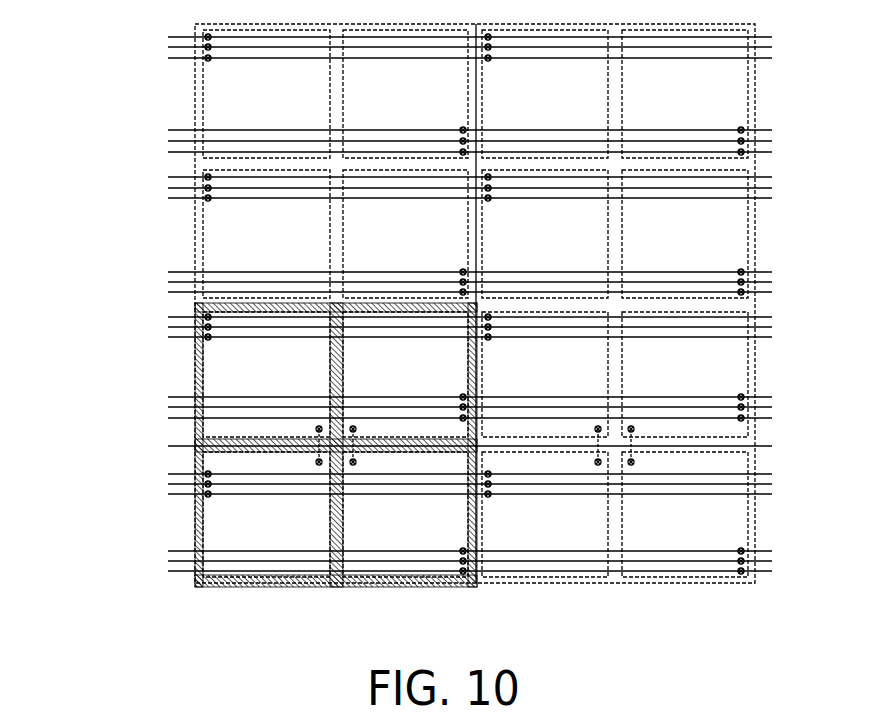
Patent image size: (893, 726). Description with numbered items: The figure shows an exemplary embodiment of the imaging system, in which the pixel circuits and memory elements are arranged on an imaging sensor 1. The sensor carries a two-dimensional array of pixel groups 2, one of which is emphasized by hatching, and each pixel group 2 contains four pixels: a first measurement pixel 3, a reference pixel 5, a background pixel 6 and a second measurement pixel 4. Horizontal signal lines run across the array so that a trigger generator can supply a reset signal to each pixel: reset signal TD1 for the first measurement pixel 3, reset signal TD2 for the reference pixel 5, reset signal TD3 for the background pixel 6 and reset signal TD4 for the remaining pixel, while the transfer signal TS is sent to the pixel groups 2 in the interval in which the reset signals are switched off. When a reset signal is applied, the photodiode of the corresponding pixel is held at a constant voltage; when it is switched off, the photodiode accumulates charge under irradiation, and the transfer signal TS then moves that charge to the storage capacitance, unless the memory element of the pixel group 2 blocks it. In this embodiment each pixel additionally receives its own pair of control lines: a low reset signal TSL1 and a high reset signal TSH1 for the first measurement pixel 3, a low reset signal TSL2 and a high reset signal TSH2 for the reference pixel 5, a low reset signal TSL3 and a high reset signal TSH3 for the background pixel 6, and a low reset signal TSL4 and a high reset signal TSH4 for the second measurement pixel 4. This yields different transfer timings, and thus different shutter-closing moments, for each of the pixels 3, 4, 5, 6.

The imaging sensor 1 is at (195, 105).
The pixel group 2 is at (337, 588).
The first measurement pixel 3 is at (254, 388).
The second measurement pixel 4 is at (391, 540).
The reference pixel 5 is at (391, 388).
The background pixel 6 is at (254, 540).
The reset signal TD1 is at (175, 318).
The low reset signal TSL1 is at (172, 327).
The high reset signal TSH1 is at (170, 338).
The reset signal TD2 is at (175, 398).
The low reset signal TSL2 is at (170, 408).
The high reset signal TSH2 is at (168, 418).
The transfer signal TS is at (195, 446).
The reset signal TD3 is at (177, 474).
The low reset signal TSL3 is at (170, 484).
The high reset signal TSH3 is at (170, 494).
The reset signal TD4 is at (175, 551).
The low reset signal TSL4 is at (172, 561).
The high reset signal TSH4 is at (170, 571).